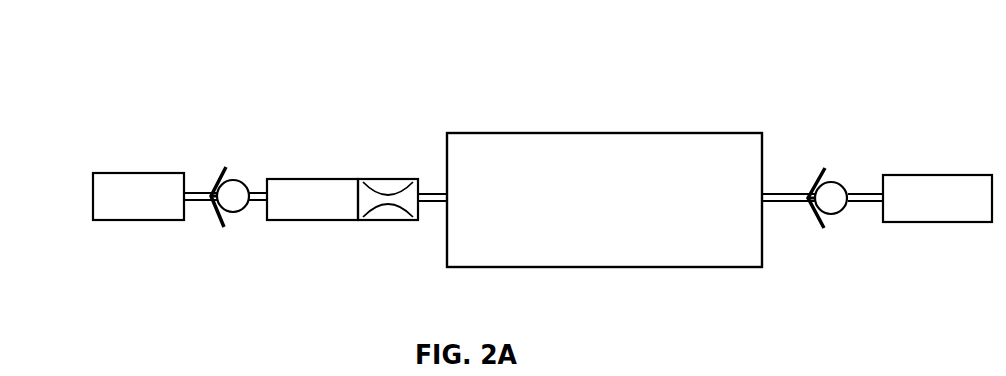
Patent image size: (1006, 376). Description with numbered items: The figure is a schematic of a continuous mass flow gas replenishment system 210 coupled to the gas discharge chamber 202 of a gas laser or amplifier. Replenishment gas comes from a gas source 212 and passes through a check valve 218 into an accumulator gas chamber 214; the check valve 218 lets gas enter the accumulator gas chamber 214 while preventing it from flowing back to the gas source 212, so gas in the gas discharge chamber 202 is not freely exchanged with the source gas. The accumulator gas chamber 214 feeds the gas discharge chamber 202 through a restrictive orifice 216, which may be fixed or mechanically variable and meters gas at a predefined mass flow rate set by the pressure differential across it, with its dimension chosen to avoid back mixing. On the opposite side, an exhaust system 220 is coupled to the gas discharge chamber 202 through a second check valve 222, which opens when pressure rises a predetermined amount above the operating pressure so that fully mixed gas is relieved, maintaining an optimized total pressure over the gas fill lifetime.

The continuous mass flow gas replenishment system 210 is at (158, 72).
The gas source 212 is at (123, 173).
The accumulator gas chamber 214 is at (310, 178).
The restrictive orifice 216 is at (379, 178).
The check valve 218 is at (208, 175).
The gas discharge chamber 202 is at (582, 132).
The exhaust system 220 is at (933, 174).
The check valve 222 is at (820, 177).